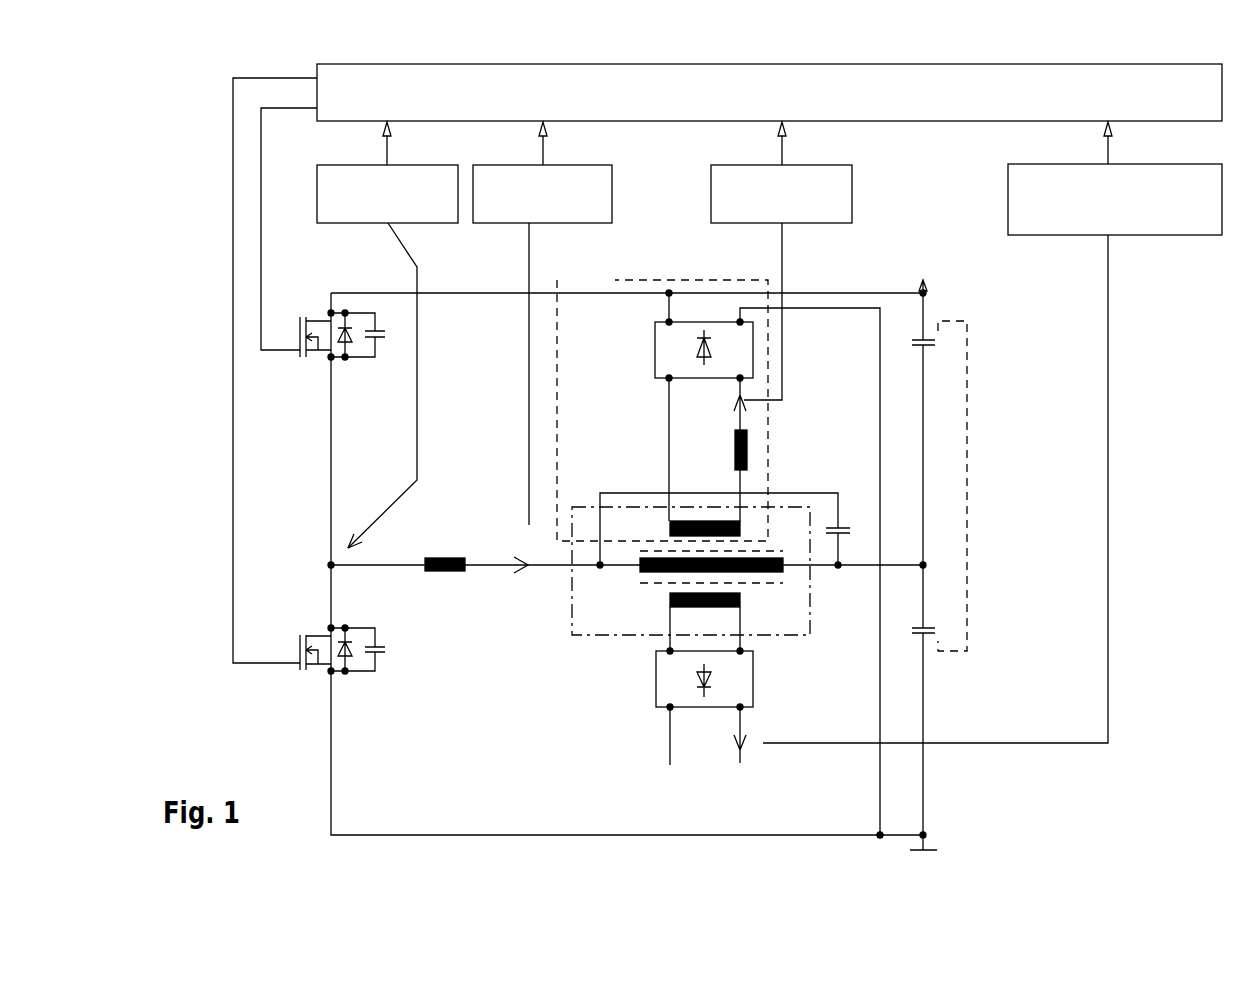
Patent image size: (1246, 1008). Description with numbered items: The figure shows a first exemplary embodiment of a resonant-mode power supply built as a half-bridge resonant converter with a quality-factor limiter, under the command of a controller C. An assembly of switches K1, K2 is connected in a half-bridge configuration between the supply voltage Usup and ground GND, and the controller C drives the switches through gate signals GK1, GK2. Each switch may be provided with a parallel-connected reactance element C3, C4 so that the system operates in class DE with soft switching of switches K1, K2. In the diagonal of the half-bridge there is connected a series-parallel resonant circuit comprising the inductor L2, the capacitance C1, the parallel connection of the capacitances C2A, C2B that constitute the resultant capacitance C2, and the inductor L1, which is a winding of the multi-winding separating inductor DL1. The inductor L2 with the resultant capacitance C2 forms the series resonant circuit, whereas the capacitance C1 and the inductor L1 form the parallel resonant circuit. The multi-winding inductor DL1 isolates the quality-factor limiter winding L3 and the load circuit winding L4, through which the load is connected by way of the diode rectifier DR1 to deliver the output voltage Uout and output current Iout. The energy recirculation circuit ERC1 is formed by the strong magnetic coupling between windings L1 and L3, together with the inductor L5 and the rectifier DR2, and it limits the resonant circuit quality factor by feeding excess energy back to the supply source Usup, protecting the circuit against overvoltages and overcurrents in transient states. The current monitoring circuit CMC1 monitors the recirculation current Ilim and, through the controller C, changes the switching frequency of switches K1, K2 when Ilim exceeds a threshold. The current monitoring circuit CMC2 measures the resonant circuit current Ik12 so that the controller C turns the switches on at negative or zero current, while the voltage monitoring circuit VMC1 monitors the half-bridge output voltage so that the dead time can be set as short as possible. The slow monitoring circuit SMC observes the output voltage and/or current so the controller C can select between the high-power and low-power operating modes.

The controller C is at (771, 78).
The gate control signal for switch K1 GK1 is at (311, 224).
The gate control signal for switch K2 GK2 is at (297, 366).
The voltage monitoring circuit VMC1 is at (361, 335).
The current monitoring circuit CMC2 is at (574, 323).
The current monitoring circuit CMC1 is at (813, 261).
The output voltage and/or current monitoring circuit SMC is at (998, 432).
The switch K1 is at (301, 329).
The reactance element C3 is at (369, 338).
The switch K2 is at (301, 644).
The reactance element C4 is at (371, 653).
The inductor L2 is at (445, 580).
The resonant circuit self-oscillation current Ik12 is at (534, 552).
The energy recirculation circuit ERC1 is at (662, 404).
The diode rectifier DR2 is at (744, 564).
The recirculation circuit current Ilim is at (721, 404).
The inductor L5 is at (757, 475).
The multi-winding inductor DL1 is at (555, 622).
The quality-factor limiter winding L3 is at (694, 459).
The inductor L1 is at (701, 572).
The load circuit winding L4 is at (705, 622).
The capacitance C1 is at (737, 529).
The diode rectifier DR1 is at (728, 679).
The output voltage Uout is at (697, 739).
The output current Iout is at (760, 739).
The supply voltage Usup is at (927, 272).
The capacitance C2A is at (942, 429).
The capacitance C2B is at (941, 700).
The resultant capacitance C2 is at (1027, 486).
The ground GND is at (933, 855).